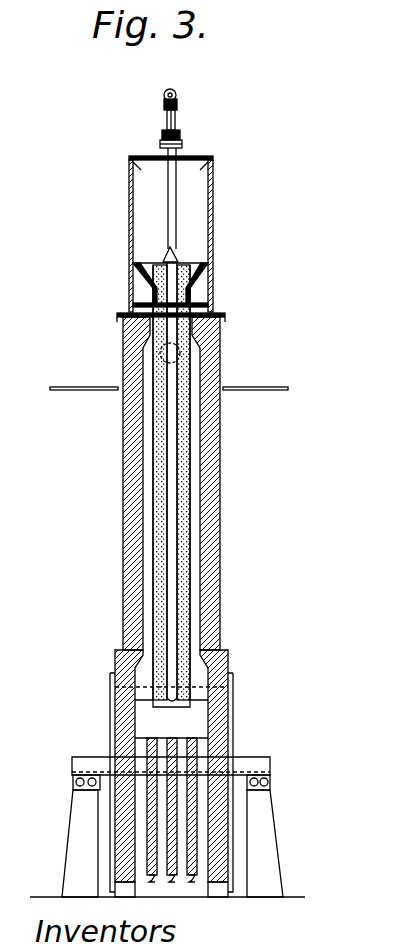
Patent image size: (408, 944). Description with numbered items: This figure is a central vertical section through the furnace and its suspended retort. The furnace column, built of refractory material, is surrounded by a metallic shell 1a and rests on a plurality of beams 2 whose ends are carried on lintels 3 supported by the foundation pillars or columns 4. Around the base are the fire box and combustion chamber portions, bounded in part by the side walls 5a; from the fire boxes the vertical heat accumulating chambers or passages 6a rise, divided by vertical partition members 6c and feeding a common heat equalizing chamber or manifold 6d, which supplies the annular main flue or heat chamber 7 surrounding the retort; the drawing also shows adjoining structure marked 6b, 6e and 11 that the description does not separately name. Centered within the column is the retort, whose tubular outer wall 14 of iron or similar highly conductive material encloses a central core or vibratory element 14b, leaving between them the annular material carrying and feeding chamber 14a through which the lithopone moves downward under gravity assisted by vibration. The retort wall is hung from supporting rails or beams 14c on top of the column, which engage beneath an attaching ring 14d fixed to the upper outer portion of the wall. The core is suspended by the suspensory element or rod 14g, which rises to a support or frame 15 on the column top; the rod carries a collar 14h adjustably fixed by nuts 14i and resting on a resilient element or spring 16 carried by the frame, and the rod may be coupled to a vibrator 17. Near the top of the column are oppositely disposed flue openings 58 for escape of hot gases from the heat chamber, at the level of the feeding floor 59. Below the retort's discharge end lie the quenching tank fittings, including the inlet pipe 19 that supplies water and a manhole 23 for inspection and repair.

The vibrator 17 is at (178, 92).
The nuts 14i is at (177, 130).
The resilient element or spring 16 is at (183, 145).
The collar 14h is at (162, 143).
The support or frame 15 is at (213, 180).
The suspensory element or rod 14g is at (177, 213).
The outer wall of retort 14 is at (190, 420).
The central core or vibratory element 14b is at (177, 458).
The annular material carrying and feeding chamber 14a is at (186, 548).
The attaching ring 14d is at (147, 298).
The supporting rails or beams 14c is at (210, 307).
The metallic shell 1a is at (223, 328).
The main flue or heat chamber 7 is at (200, 510).
The flue openings 58 is at (150, 350).
The inlet pipe 19 is at (218, 353).
The feeding floor 59 is at (65, 385).
The lower housing 11 is at (228, 693).
The chamber 6b is at (171, 719).
The heat accumulating chambers or passages 6a is at (182, 848).
The heat equalizing chamber or manifold 6d is at (153, 880).
The vertical partition members 6c is at (168, 773).
The channel 6e is at (148, 757).
The beams 2 is at (255, 765).
The lintels 3 is at (73, 782).
The side walls 5a is at (85, 805).
The foundation pillars or columns 4 is at (70, 880).
The manhole 23 is at (112, 890).